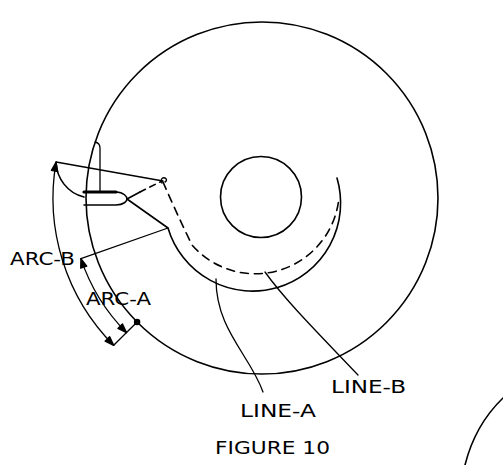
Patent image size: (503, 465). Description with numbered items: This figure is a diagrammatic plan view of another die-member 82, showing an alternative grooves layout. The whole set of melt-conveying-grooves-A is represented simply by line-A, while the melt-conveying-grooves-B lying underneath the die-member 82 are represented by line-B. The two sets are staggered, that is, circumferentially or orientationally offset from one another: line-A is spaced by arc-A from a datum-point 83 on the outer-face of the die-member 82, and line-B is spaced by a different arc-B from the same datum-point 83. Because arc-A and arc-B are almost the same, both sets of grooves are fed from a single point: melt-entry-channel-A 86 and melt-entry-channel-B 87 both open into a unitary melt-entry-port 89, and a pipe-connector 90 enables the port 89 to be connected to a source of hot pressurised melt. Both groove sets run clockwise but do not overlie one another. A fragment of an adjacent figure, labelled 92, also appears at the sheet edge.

The die-member 82 is at (381, 95).
The datum-point 83 is at (137, 323).
The melt-entry-channel-A 86 is at (143, 211).
The melt-entry-channel-B 87 is at (146, 179).
The melt-entry-port 89 is at (95, 142).
The pipe-connector 90 is at (55, 160).
The adjacent figure element 92 is at (428, 464).